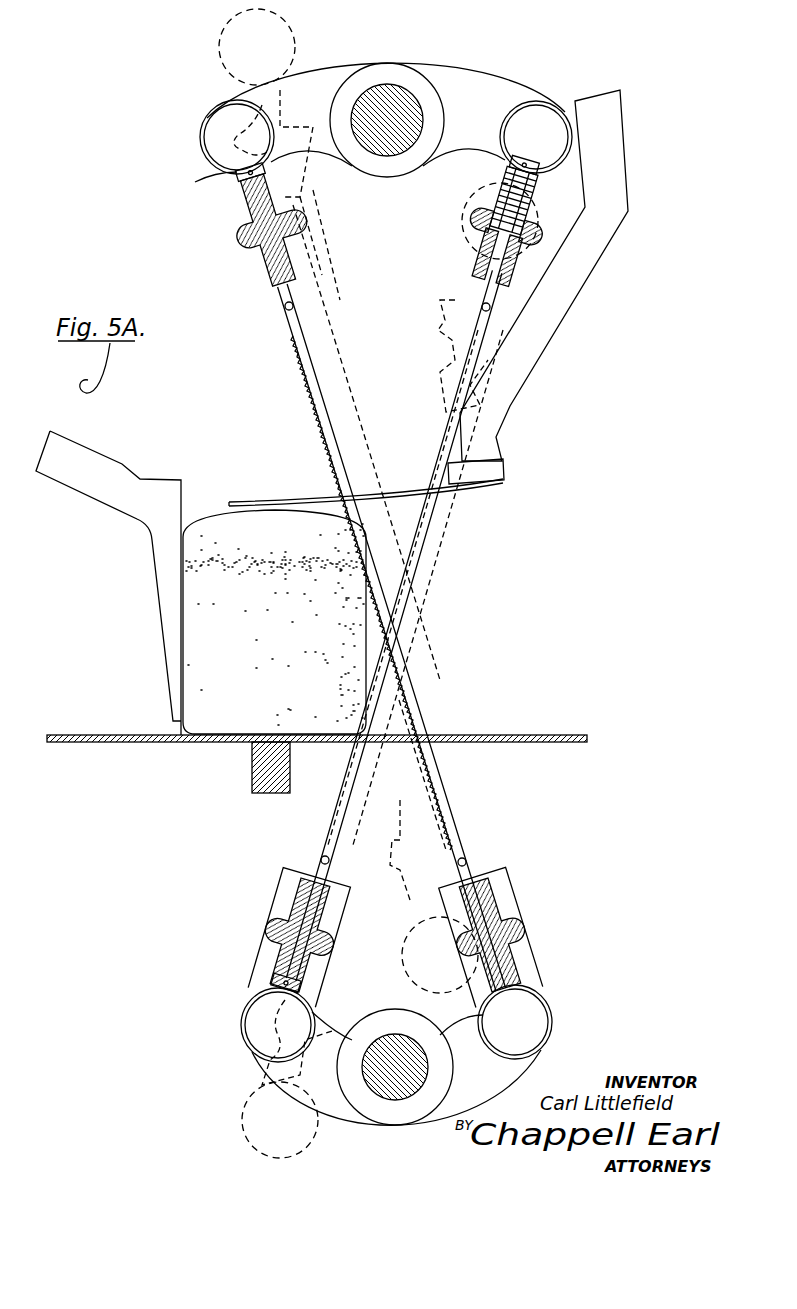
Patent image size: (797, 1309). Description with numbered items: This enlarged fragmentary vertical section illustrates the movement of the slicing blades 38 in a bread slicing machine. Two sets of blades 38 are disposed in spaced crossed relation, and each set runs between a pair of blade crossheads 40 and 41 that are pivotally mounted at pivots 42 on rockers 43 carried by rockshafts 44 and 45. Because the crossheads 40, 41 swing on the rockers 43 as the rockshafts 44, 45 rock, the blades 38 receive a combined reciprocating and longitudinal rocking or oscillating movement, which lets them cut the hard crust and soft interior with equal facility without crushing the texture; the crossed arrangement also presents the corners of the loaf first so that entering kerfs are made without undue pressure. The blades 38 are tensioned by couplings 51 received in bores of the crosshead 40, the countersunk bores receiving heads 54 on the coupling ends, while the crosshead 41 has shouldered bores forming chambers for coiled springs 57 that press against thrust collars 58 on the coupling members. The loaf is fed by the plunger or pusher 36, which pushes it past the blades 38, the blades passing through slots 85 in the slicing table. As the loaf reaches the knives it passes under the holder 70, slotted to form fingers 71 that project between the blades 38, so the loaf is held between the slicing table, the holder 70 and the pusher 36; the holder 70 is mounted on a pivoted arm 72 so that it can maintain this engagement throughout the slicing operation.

The plunger or pusher 36 is at (164, 603).
The slicing blades 38 is at (448, 431).
The blade crosshead 40 is at (267, 257).
The blade crosshead 41 is at (277, 888).
The pivot 42 is at (212, 147).
The rocker 43 is at (320, 147).
The rockshaft 44 is at (368, 147).
The rockshaft 45 is at (382, 1043).
The coupling 51 is at (91, 464).
The head 54 is at (273, 972).
The coiled spring 57 is at (531, 209).
The thrust collar 58 is at (238, 175).
The holder 70 is at (482, 486).
The fingers 71 is at (273, 500).
The arm 72 is at (556, 321).
The slots 85 is at (450, 742).